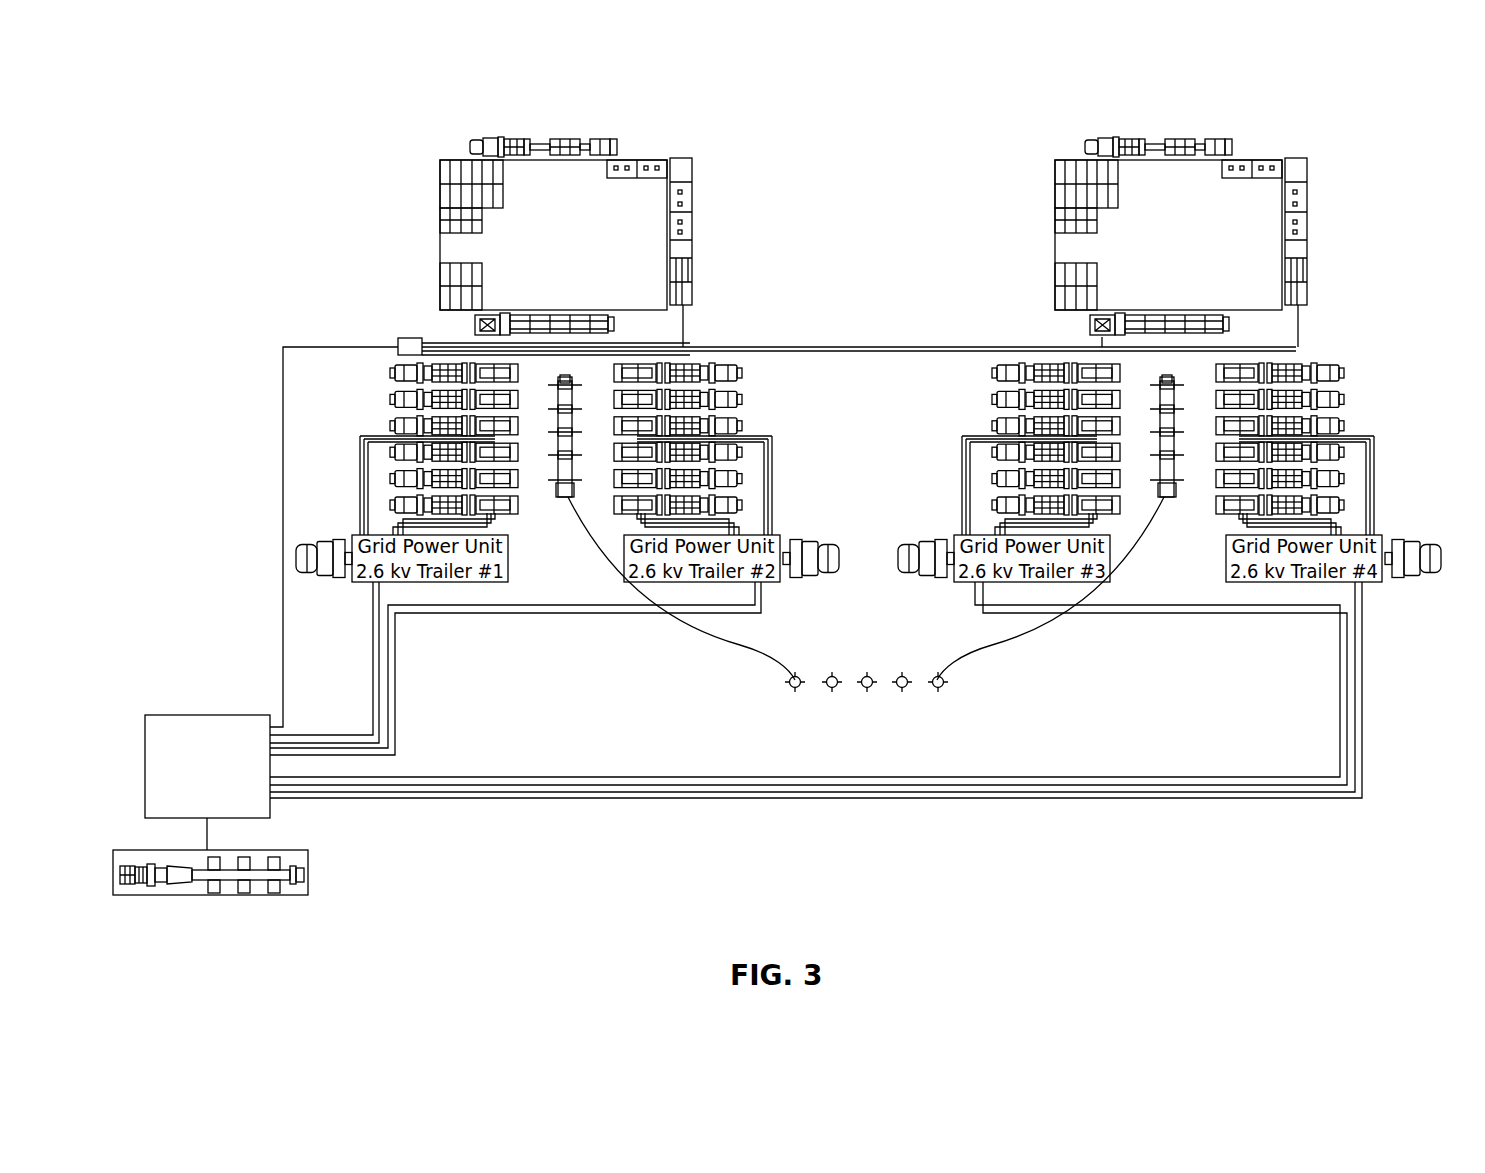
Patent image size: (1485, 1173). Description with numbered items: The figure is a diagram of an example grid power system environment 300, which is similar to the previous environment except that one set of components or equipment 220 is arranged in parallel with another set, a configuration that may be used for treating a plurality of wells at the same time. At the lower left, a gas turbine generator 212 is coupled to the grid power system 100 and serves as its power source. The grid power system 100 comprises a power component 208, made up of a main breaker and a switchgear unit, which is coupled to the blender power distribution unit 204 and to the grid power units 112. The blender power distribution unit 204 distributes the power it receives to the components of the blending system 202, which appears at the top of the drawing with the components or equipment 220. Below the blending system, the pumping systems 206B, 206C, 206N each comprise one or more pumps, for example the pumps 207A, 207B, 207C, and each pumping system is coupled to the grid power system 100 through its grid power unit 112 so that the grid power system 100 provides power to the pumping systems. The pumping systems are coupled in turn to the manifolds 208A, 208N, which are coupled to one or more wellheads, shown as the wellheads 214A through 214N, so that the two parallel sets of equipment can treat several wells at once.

The grid power system environment 300 is at (190, 99).
The grid power system 100 is at (246, 821).
The grid power unit 112 is at (352, 537).
The blending system 202 is at (530, 122).
The blender power distribution unit 204 is at (410, 338).
The pumping system 206B is at (737, 437).
The pumping system 206C is at (1003, 437).
The pumping system 206N is at (821, 448).
The pump 207A is at (404, 366).
The pump 207B is at (736, 362).
The pump 207C is at (1035, 337).
The power component 208 is at (185, 715).
The manifold 208A is at (566, 498).
The manifold 208N is at (1168, 498).
The gas turbine generator 212 is at (225, 885).
The wellhead 214A is at (790, 687).
The wellhead 214N is at (943, 687).
The components or equipment 220 is at (385, 179).